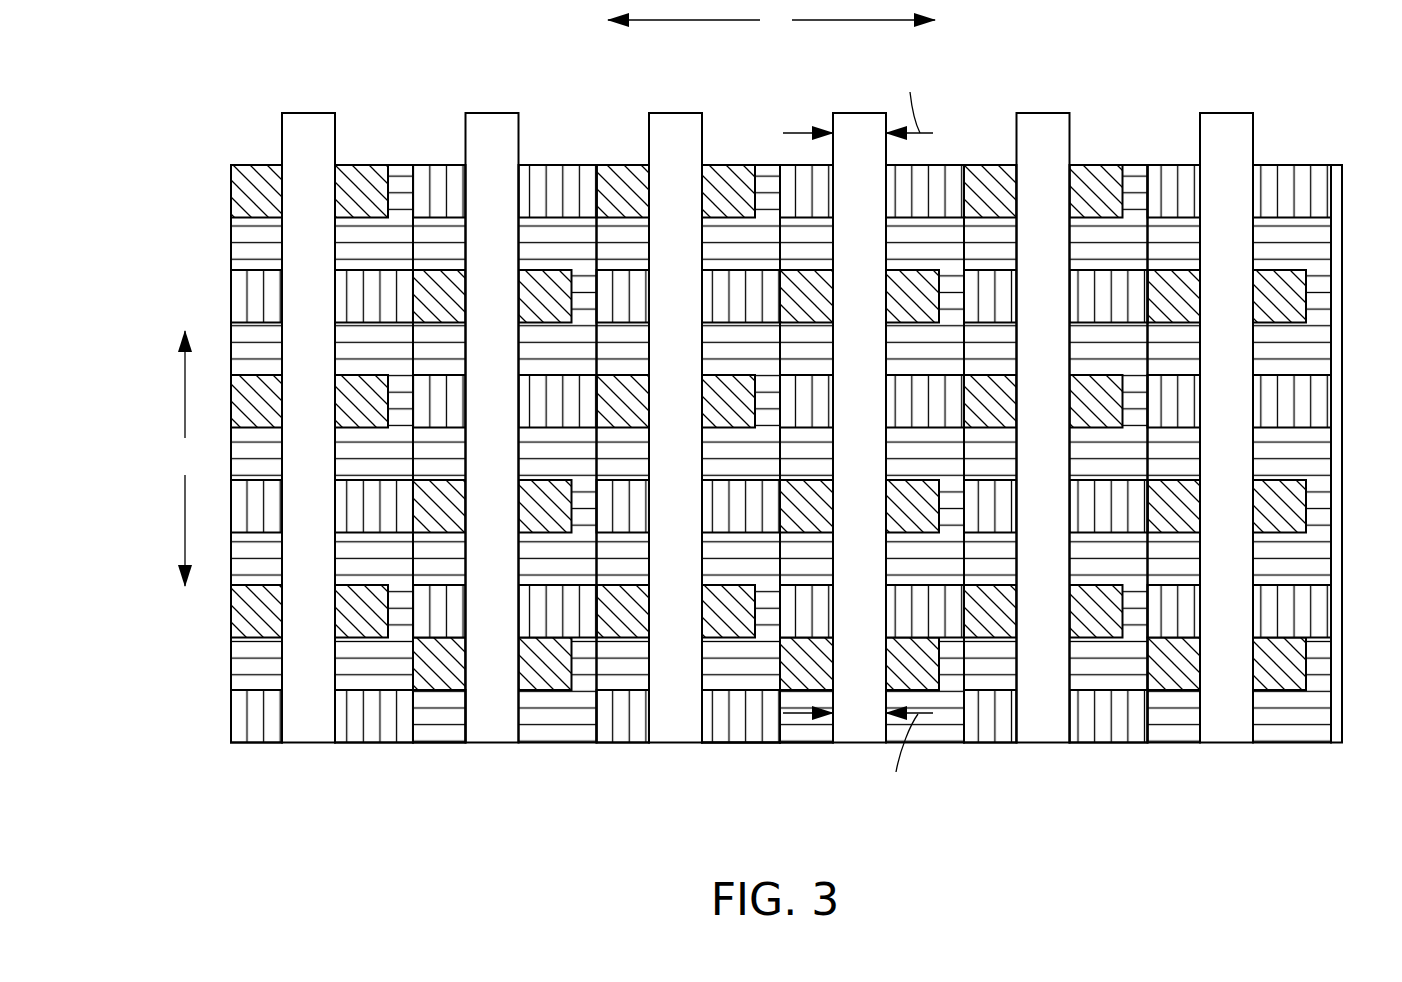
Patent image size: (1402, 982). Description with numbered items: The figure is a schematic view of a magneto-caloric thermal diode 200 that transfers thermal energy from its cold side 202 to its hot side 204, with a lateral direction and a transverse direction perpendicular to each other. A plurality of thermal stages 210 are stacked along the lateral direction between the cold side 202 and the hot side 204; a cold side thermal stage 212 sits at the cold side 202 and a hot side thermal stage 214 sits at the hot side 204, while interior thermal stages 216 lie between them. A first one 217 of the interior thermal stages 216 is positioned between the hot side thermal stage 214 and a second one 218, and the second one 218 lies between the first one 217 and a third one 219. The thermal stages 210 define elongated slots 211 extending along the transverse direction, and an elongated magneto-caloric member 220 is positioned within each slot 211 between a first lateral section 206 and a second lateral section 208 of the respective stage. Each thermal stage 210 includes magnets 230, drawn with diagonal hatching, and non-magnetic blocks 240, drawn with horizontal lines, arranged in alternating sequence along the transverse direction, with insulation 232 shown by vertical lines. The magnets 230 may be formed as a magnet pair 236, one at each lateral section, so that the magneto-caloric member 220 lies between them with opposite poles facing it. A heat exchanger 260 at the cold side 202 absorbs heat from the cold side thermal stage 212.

The magneto-caloric thermal diode 200 is at (163, 72).
The cold side 202 is at (1330, 746).
The hot side 204 is at (231, 746).
The first lateral section 206 is at (1103, 164).
The second lateral section 208 is at (990, 164).
The thermal stages 210 is at (437, 164).
The elongated slots 211 is at (649, 164).
The cold side thermal stage 212 is at (1290, 164).
The hot side thermal stage 214 is at (255, 164).
The interior thermal stages 216 is at (566, 746).
The first one of interior thermal stages 217 is at (442, 746).
The second one of interior thermal stages 218 is at (739, 746).
The third one of interior thermal stages 219 is at (807, 746).
The elongated magneto-caloric members 220 is at (314, 125).
The magnets 230 is at (256, 195).
The insulation 232 is at (256, 243).
The magnet pair 236 is at (352, 609).
The non-magnetic blocks 240 is at (256, 300).
The heat exchanger 260 is at (1345, 238).